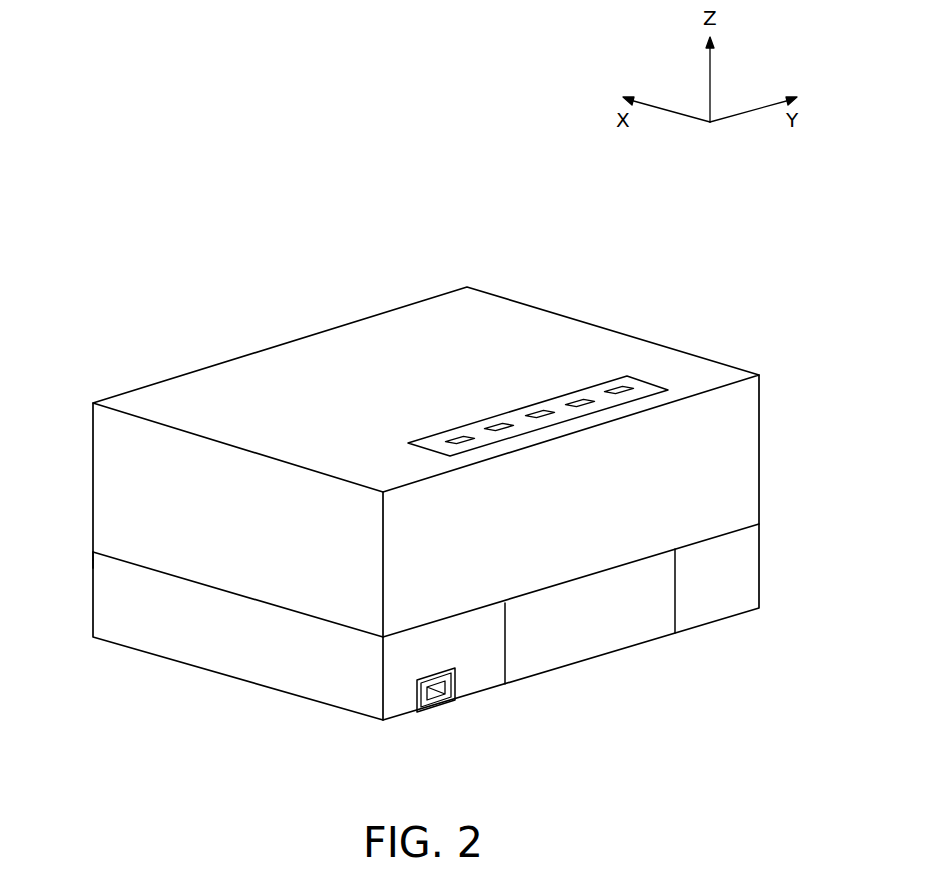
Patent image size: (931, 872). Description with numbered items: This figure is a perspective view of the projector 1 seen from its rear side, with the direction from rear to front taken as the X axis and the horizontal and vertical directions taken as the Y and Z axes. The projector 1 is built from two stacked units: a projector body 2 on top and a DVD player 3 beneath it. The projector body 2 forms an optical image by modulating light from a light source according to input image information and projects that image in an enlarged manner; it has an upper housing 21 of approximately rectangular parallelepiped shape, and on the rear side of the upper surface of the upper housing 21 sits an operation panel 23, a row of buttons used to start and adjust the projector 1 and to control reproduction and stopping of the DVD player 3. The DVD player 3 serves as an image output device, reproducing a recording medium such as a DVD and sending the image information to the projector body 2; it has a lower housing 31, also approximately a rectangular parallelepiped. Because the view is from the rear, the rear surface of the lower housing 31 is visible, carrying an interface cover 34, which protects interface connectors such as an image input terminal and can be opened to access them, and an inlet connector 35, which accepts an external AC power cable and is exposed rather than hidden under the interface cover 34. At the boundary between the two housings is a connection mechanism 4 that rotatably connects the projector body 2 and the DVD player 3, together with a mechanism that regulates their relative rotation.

The projector 1 is at (439, 481).
The projector body 2 is at (467, 462).
The upper housing 21 is at (747, 445).
The operation panel 23 is at (423, 449).
The DVD player 3 is at (467, 636).
The lower housing 31 is at (723, 607).
The interface cover 34 is at (592, 645).
The inlet connector 35 is at (455, 685).
The connection mechanism 4 is at (124, 562).